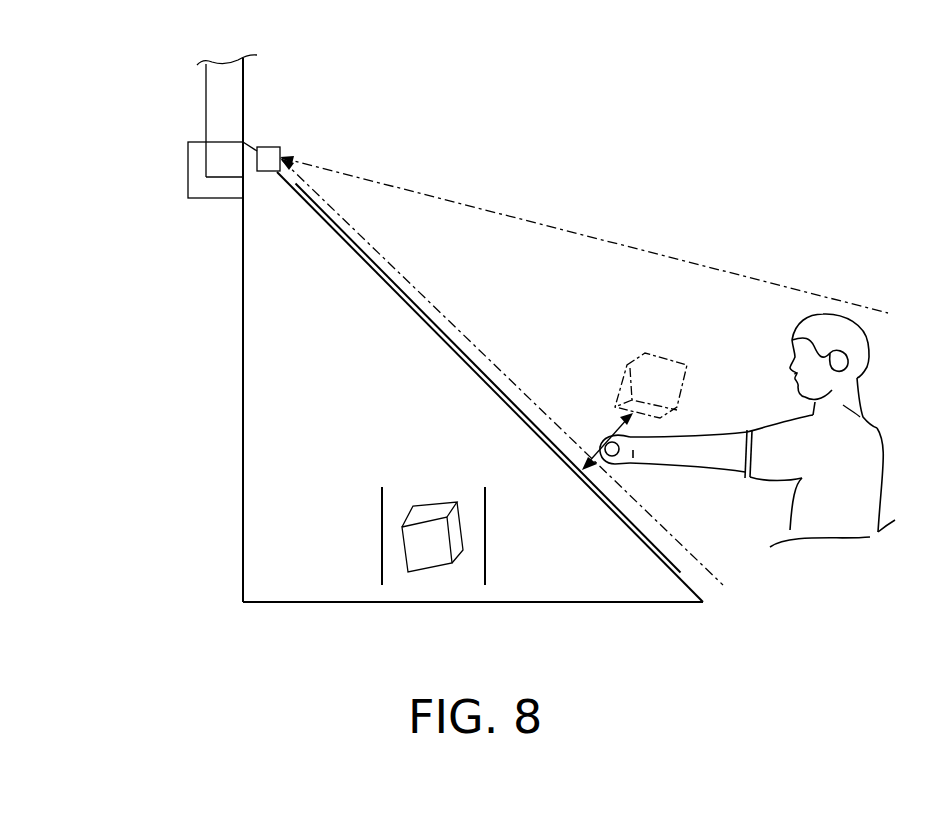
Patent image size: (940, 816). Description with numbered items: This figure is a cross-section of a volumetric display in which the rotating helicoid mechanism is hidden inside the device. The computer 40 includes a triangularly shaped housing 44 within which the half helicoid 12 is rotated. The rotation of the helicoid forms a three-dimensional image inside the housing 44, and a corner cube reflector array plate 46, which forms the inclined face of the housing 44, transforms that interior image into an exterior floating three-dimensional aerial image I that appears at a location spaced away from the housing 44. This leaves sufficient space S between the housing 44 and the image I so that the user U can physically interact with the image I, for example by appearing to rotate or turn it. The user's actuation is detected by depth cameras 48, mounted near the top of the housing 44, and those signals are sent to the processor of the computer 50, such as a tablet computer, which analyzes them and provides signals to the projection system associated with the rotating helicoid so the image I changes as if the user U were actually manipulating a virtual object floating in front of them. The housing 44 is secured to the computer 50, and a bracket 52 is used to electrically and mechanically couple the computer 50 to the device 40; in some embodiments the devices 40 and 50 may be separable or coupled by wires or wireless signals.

The half helicoid 12 is at (362, 550).
The computer 40 is at (148, 259).
The triangularly shaped housing 44 is at (472, 603).
The corner cube reflector array plate 46 is at (497, 391).
The 3D depth cameras 48 is at (267, 146).
The computer 50 is at (206, 99).
The bracket 52 is at (216, 199).
The space S is at (600, 452).
The floating 3D aerial image I is at (668, 357).
The user U is at (868, 424).